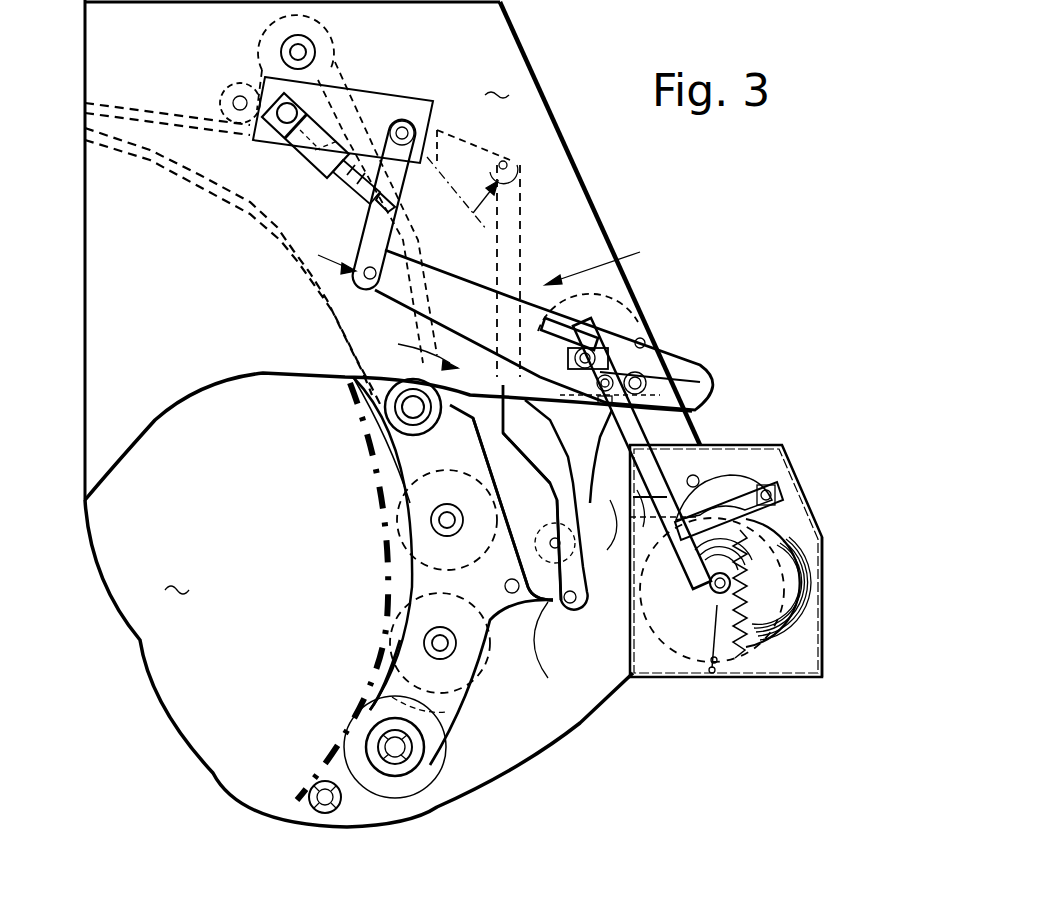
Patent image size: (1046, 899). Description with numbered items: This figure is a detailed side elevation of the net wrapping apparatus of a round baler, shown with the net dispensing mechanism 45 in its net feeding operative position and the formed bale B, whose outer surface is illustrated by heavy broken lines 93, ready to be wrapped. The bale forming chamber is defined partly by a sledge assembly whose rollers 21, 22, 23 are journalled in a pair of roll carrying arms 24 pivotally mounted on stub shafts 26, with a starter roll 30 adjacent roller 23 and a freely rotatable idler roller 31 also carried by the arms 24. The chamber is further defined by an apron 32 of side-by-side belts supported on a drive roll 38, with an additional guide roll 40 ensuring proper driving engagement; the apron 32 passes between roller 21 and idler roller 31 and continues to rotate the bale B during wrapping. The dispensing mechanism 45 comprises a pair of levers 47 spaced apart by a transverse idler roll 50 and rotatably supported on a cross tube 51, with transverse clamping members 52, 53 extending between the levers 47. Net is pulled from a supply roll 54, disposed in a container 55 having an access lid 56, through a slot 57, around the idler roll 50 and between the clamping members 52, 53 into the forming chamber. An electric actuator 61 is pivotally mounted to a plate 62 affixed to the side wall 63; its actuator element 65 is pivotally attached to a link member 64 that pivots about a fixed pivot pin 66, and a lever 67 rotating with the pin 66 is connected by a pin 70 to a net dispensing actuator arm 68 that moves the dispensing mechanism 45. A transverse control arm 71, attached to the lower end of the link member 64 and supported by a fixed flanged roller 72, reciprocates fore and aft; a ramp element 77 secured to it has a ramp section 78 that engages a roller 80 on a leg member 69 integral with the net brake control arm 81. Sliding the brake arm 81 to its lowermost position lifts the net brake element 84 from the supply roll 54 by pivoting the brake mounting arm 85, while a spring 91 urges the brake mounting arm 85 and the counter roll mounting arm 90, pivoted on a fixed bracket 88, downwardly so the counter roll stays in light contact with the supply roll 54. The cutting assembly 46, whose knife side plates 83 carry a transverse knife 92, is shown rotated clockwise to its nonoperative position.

The bale B is at (177, 574).
The roller 21 is at (430, 517).
The roller 22 is at (392, 630).
The roller 23 is at (352, 738).
The roll carrying arm 24 is at (405, 680).
The stub shaft 26 is at (405, 765).
The starter roll 30 is at (312, 808).
The idler roller 31 is at (385, 395).
The apron 32 is at (132, 153).
The drive roll 38 is at (284, 20).
The guide roll 40 is at (232, 84).
The net dispensing mechanism 45 is at (520, 511).
The cutting assembly 46 is at (606, 258).
The lever 47 is at (554, 649).
The idler roll 50 is at (553, 607).
The cross tube 51 is at (505, 585).
The clamping member 52 is at (372, 447).
The clamping member 53 is at (395, 487).
The supply roll 54 is at (800, 583).
The container 55 is at (826, 640).
The access lid 56 is at (798, 482).
The slot 57 is at (569, 527).
The electric actuator 61 is at (317, 143).
The plate 62 is at (370, 100).
The side wall 63 is at (495, 80).
The link member 64 is at (392, 233).
The actuator element 65 is at (352, 190).
The pivot pin 66 is at (405, 120).
The lever 67 is at (460, 137).
The net dispensing actuator arm 68 is at (514, 245).
The leg member 69 is at (647, 350).
The pin 70 is at (515, 158).
The control arm 71 is at (405, 300).
The flanged roller 72 is at (630, 372).
The ramp element 77 is at (585, 330).
The ramp section 78 is at (620, 340).
The roller 80 is at (482, 328).
The net brake control arm 81 is at (648, 433).
The knife side plate 83 is at (560, 292).
The net brake element 84 is at (790, 500).
The brake mounting arm 85 is at (715, 660).
The fixed bracket 88 is at (679, 607).
The counter roll mounting arm 90 is at (705, 472).
The spring 91 is at (735, 660).
The knife 92 is at (410, 353).
The heavy broken lines 93 is at (372, 457).